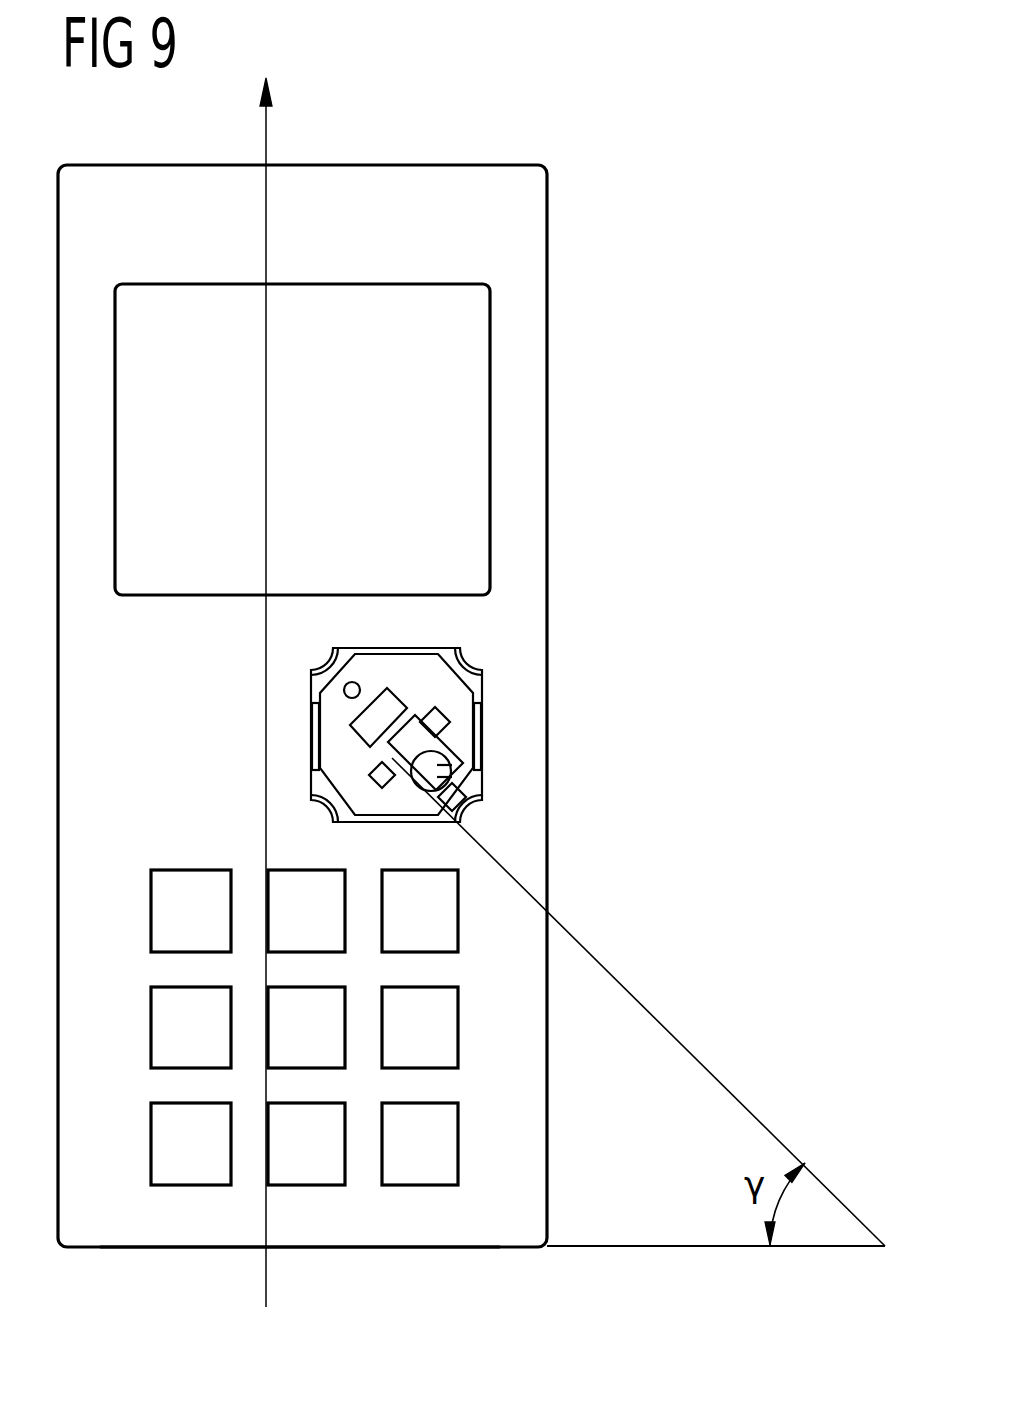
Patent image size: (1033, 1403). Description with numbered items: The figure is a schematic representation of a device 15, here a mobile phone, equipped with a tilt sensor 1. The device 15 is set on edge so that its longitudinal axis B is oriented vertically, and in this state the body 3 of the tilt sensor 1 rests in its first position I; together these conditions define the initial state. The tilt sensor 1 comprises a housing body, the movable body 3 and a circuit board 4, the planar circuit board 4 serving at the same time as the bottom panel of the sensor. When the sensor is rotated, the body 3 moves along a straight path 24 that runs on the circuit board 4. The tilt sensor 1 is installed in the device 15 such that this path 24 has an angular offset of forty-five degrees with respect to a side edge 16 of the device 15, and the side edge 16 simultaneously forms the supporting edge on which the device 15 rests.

The device 15 is at (624, 321).
The tilt sensor 1 is at (544, 924).
The body 3 is at (452, 764).
The circuit board 4 is at (412, 647).
The path 24 is at (384, 758).
The side edge 16 is at (370, 1249).
The longitudinal axis B is at (281, 692).
The first position I is at (466, 800).